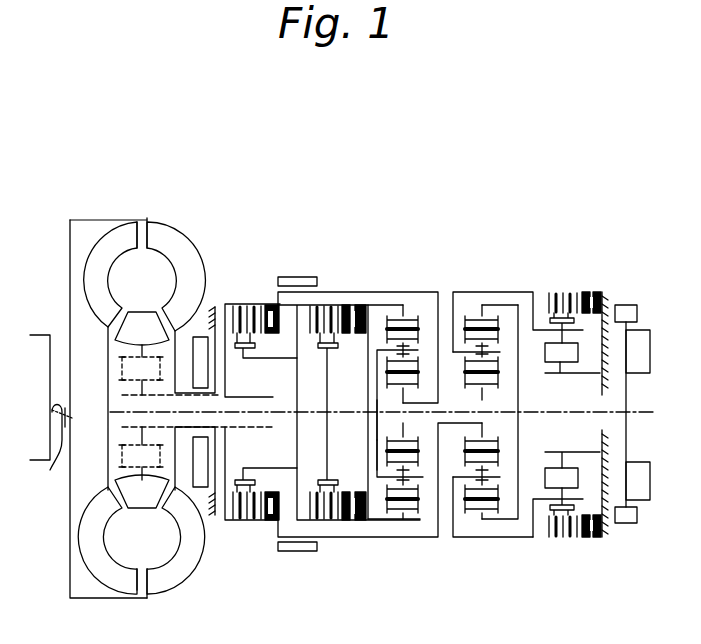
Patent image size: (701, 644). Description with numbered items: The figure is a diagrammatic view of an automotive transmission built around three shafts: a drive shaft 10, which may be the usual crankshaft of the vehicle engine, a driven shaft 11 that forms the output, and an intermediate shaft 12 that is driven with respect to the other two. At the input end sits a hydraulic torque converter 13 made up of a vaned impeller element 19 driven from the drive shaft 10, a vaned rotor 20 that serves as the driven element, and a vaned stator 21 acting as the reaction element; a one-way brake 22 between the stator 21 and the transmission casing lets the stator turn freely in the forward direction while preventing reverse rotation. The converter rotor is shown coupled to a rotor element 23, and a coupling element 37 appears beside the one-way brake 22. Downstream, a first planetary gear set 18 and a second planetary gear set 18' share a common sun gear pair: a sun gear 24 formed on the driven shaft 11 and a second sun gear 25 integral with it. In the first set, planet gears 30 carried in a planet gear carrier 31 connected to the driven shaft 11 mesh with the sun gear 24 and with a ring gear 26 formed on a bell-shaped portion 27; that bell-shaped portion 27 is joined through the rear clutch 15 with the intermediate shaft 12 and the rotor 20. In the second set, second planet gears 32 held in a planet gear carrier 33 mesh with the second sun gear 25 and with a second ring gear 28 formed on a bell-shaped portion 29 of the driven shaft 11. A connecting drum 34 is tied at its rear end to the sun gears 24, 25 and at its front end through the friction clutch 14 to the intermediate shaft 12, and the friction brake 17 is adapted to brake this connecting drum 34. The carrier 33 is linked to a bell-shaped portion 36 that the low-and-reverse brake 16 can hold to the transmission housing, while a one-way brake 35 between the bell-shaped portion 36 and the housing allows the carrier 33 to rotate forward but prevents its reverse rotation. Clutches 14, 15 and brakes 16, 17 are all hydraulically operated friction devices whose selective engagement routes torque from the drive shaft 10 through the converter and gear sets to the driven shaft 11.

The drive shaft 10 is at (45, 422).
The driven shaft 11 is at (643, 412).
The intermediate shaft 12 is at (232, 410).
The hydraulic torque converter 13 is at (178, 238).
The friction clutch 14 is at (243, 298).
The rear clutch 15 is at (335, 300).
The low-and-reverse brake 16 is at (563, 288).
The friction brake 17 is at (292, 275).
The first planetary gear set 18 is at (412, 387).
The second planetary gear set 18' is at (472, 382).
The vaned impeller element 19 is at (193, 536).
The vaned rotor 20 is at (92, 536).
The vaned stator 21 is at (130, 503).
The one-way brake 22 is at (108, 383).
The rotor of first electric machine 23 is at (130, 337).
The sun gear 24 is at (380, 442).
The second sun gear 25 is at (468, 434).
The ring gear 26 is at (412, 514).
The bell-shaped portion 27 is at (374, 303).
The second ring gear 28 is at (472, 514).
The bell-shaped portion 29 is at (515, 524).
The planet gears 30 is at (377, 358).
The planet gear carrier 31 is at (375, 349).
The second planet gears 32 is at (498, 364).
The planet gear carrier 33 is at (452, 529).
The connecting drum 34 is at (358, 291).
The one-way brake 35 is at (572, 365).
The bell-shaped portion 36 is at (503, 292).
The coupling 37 is at (76, 420).